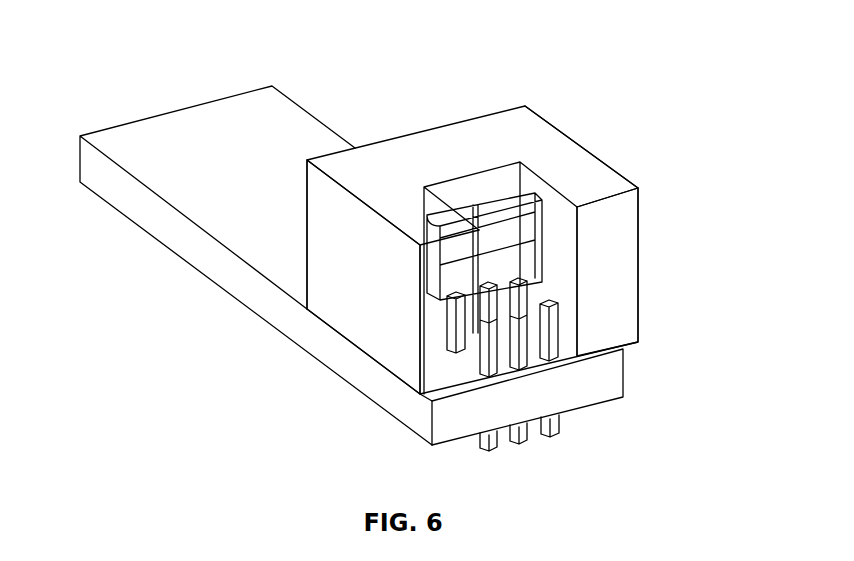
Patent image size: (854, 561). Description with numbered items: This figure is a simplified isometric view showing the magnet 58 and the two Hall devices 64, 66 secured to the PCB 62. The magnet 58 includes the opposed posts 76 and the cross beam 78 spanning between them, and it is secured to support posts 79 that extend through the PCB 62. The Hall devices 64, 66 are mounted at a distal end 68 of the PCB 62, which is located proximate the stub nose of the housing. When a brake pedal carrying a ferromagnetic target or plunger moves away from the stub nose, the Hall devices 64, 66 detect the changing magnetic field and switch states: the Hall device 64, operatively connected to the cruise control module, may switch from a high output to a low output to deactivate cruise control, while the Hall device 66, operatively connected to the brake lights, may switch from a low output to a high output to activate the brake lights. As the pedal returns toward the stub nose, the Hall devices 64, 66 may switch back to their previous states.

The magnet 58 is at (580, 145).
The PCB 62 is at (598, 387).
The Hall device 64 is at (558, 224).
The Hall device 66 is at (513, 207).
The distal end 68 is at (396, 418).
The opposed posts 76 is at (650, 230).
The cross beam 78 is at (440, 138).
The support posts 79 is at (490, 452).